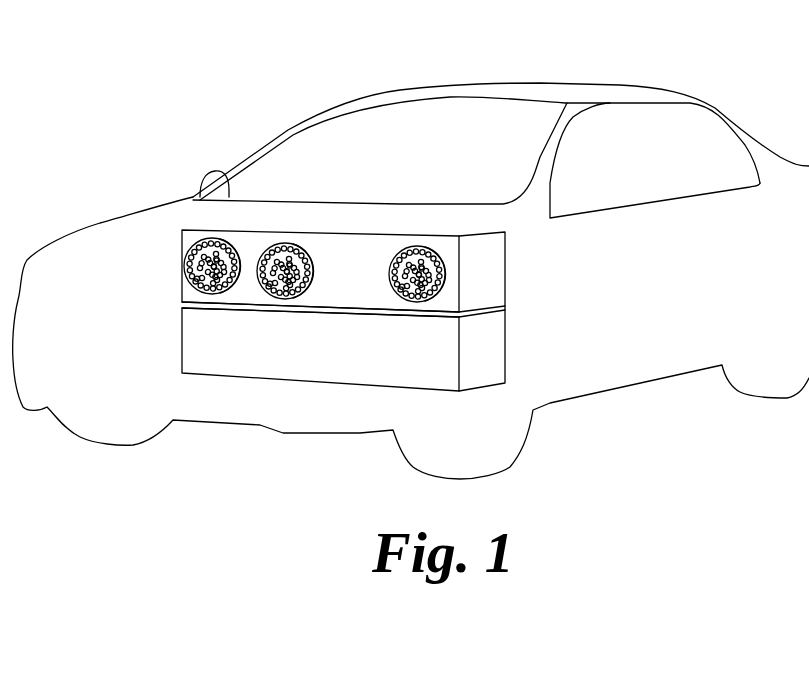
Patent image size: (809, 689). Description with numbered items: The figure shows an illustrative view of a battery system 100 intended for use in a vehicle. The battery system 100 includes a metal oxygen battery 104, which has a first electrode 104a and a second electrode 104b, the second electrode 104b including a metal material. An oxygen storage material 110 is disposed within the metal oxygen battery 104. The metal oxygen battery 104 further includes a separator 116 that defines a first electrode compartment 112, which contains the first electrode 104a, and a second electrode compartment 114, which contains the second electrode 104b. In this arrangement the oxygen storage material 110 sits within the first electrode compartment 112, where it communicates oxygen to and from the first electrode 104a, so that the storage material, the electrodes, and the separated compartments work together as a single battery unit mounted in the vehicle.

The battery system 100 is at (513, 120).
The metal oxygen battery 104 is at (391, 307).
The first electrode 104a is at (279, 295).
The second electrode 104b is at (339, 360).
The oxygen storage material 110 is at (257, 300).
The first electrode compartment 112 is at (367, 288).
The second electrode compartment 114 is at (402, 349).
The separator 116 is at (505, 312).